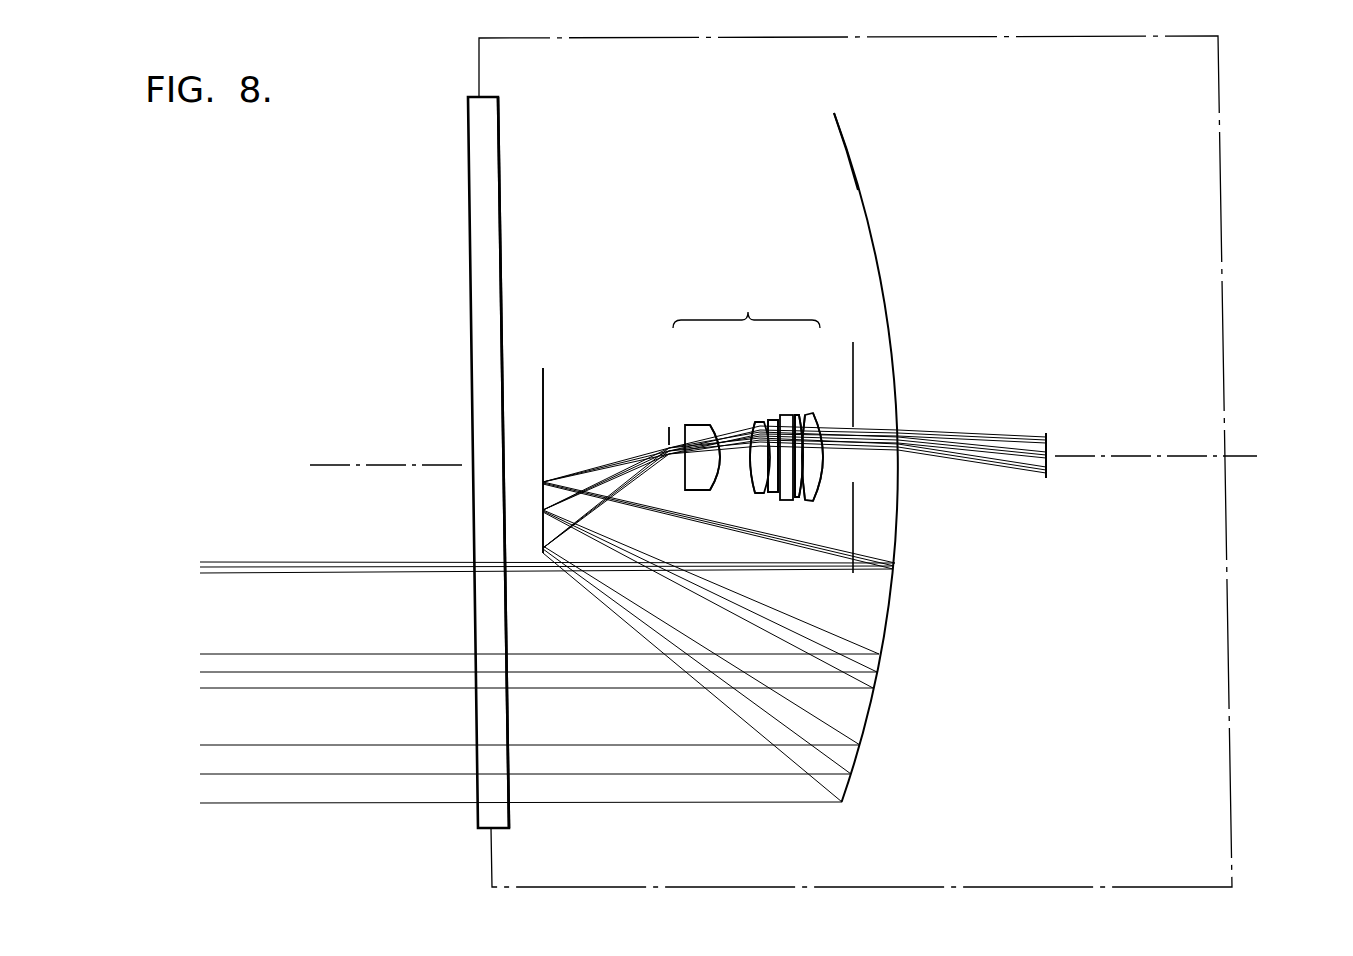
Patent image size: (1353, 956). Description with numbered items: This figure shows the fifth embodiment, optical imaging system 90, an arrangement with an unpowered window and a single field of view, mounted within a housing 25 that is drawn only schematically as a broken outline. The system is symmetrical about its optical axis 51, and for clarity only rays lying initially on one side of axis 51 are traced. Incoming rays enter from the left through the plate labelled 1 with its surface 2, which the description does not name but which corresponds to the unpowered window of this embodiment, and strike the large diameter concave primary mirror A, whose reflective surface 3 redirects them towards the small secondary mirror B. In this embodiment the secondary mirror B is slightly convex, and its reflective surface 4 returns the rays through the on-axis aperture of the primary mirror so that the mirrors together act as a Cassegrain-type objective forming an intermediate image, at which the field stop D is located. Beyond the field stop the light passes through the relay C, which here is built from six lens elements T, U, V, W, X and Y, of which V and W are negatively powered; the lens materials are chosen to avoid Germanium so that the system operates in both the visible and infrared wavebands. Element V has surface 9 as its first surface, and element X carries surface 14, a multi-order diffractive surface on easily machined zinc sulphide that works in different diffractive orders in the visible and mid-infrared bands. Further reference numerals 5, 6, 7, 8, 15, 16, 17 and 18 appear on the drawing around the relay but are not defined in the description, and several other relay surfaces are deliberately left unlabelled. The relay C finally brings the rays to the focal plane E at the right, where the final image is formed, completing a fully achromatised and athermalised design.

The transparent plate 1 is at (468, 137).
The plate surface 2 is at (498, 152).
The reflective surface 3 is at (843, 140).
The reflective surface 4 is at (545, 384).
The field lens 5 is at (683, 477).
The lens surface 6 is at (720, 430).
The lens surface 7 is at (753, 423).
The lens element 8 is at (772, 410).
The surface 9 is at (767, 493).
The diffractive surface 14 is at (800, 498).
The lens surface 15 is at (808, 499).
The lens element 16 is at (825, 482).
The stop plane 17 is at (857, 474).
The detector image plane 18 is at (1047, 443).
The housing 25 is at (1224, 114).
The optical axis 51 is at (333, 465).
The optical imaging system 90 is at (1064, 205).
The primary mirror A is at (834, 109).
The secondary mirror B is at (540, 347).
The relay C is at (746, 305).
The field stop D is at (667, 414).
The focal plane E is at (1047, 421).
The lens element T is at (694, 401).
The lens element U is at (752, 399).
The lens element V is at (777, 402).
The lens element W is at (788, 398).
The lens element X is at (802, 400).
The lens element Y is at (820, 397).